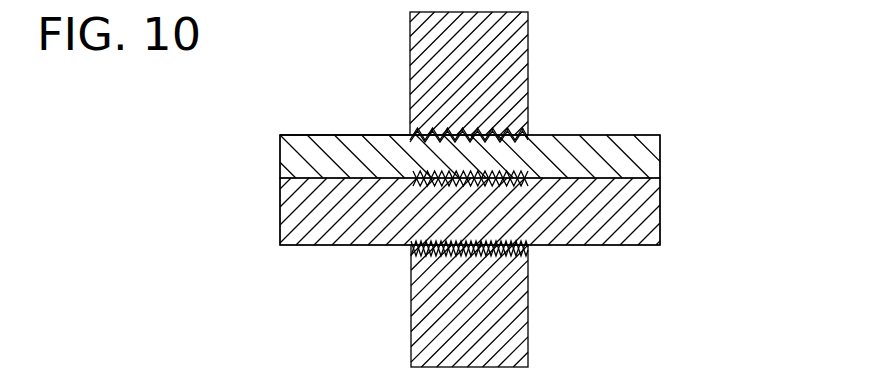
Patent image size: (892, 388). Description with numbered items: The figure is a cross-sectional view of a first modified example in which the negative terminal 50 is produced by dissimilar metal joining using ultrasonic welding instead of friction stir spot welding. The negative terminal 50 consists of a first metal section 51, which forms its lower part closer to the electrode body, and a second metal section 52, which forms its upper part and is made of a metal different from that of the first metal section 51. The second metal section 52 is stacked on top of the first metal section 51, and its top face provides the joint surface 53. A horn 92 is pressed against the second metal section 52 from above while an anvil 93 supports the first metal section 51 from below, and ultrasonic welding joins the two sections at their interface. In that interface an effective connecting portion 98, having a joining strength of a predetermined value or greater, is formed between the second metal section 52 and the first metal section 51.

The negative terminal 50 is at (788, 161).
The first metal section 51 is at (622, 212).
The second metal section 52 is at (622, 165).
The joint surface 53 is at (352, 134).
The horn 92 is at (500, 70).
The anvil 93 is at (493, 308).
The effective connecting portion 98 is at (430, 180).